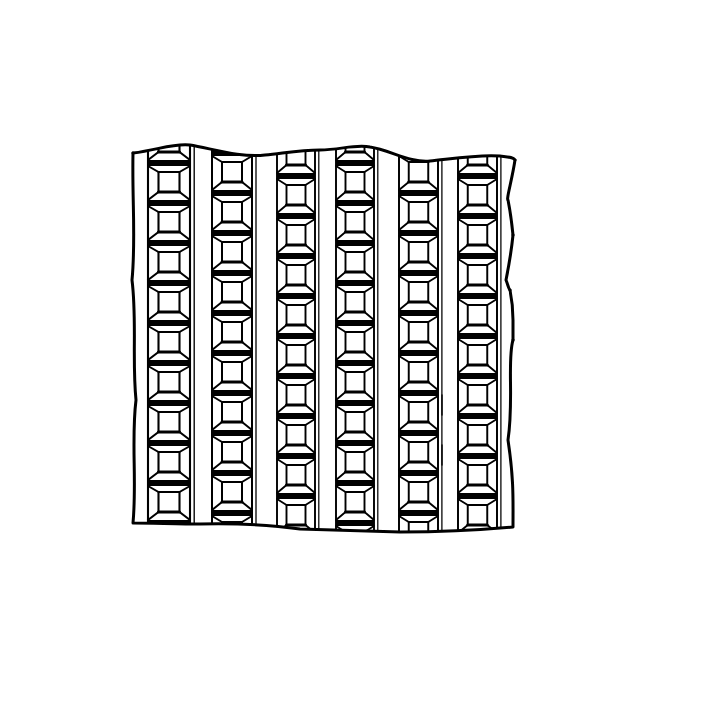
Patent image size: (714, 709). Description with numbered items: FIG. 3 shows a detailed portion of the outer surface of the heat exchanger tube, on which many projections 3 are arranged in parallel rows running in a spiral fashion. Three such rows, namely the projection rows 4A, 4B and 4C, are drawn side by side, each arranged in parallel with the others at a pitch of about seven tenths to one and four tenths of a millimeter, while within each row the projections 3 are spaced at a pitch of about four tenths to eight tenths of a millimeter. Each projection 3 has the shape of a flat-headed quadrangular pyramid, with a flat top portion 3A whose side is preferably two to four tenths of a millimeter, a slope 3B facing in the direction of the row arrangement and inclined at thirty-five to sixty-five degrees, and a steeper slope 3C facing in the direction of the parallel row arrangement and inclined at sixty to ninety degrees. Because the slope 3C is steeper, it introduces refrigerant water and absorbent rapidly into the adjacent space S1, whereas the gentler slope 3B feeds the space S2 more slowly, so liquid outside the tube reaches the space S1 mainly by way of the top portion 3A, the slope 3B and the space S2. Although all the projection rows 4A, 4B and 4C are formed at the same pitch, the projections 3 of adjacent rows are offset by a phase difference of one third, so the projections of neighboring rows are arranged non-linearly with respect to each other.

The projection 3 is at (510, 362).
The top portion 3A is at (500, 197).
The slope 3B is at (500, 275).
The slope 3C is at (500, 330).
The projection row 4A is at (171, 524).
The projection row 4B is at (237, 522).
The projection row 4C is at (293, 528).
The space S1 is at (450, 404).
The space S2 is at (450, 456).